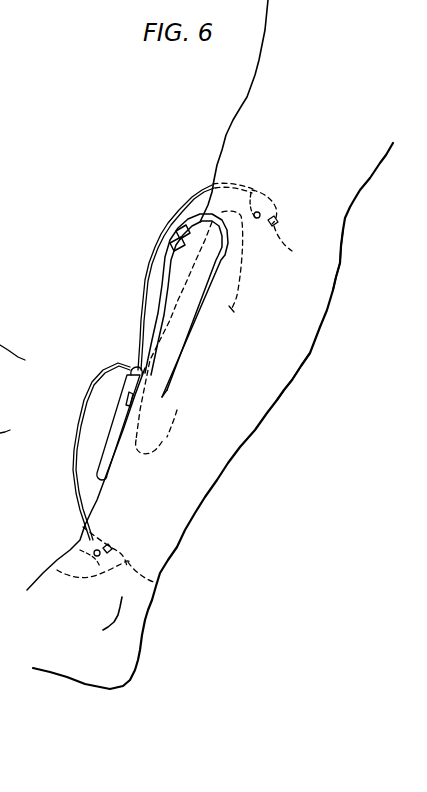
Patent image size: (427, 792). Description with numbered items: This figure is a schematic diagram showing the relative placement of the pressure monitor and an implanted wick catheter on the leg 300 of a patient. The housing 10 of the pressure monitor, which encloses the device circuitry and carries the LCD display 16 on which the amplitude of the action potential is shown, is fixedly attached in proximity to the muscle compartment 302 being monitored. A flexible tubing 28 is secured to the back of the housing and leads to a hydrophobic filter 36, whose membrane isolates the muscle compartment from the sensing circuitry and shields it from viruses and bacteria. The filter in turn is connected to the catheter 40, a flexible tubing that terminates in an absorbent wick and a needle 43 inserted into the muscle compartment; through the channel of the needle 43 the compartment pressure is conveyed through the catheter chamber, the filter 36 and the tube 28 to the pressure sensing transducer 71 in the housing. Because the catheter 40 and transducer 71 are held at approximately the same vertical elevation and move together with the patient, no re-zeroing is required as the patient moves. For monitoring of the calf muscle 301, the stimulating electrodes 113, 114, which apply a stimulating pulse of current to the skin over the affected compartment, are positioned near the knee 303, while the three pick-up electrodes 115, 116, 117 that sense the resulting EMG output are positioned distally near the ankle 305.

The housing 10 is at (95, 445).
The LCD display 16 is at (12, 369).
The flexible tubing 28 is at (163, 361).
The hydrophobic filter 36 is at (151, 222).
The catheter 40 is at (198, 325).
The needle 43 is at (198, 391).
The pressure sensing transducer 71 is at (154, 432).
The stimulating electrode 113 is at (254, 186).
The stimulating electrode 114 is at (297, 252).
The pick-up electrode 115 is at (68, 541).
The pick-up electrode 116 is at (45, 566).
The pick-up electrode 117 is at (158, 585).
The leg 300 is at (213, 416).
The calf muscle 301 is at (305, 398).
The muscle compartment 302 is at (299, 292).
The knee 303 is at (203, 111).
The ankle 305 is at (154, 631).